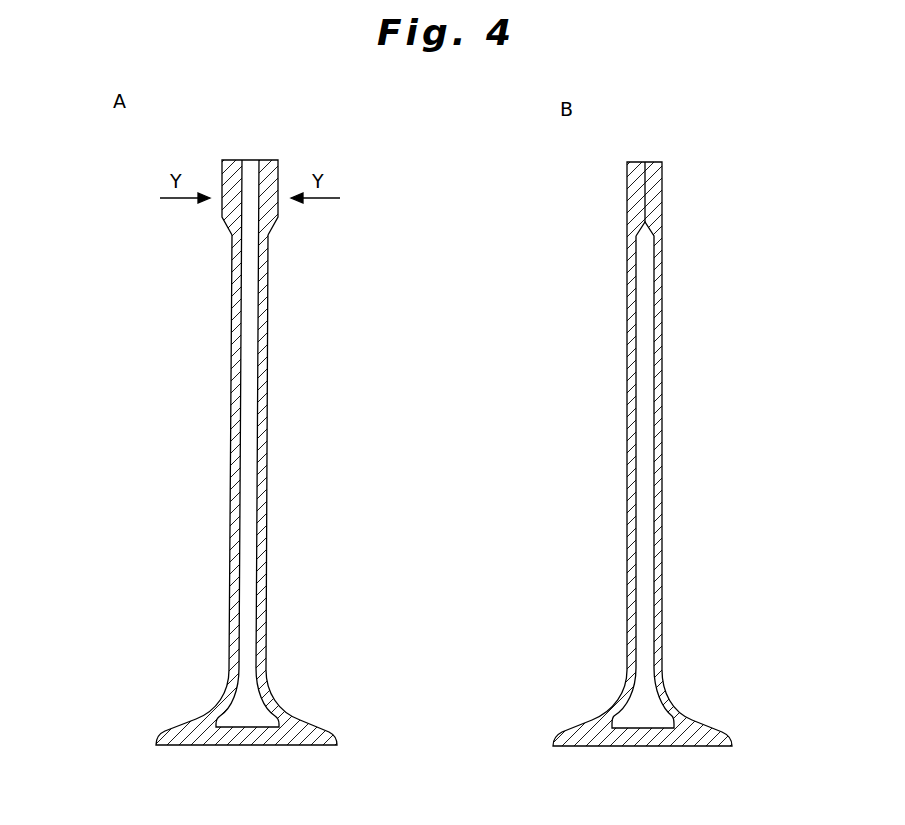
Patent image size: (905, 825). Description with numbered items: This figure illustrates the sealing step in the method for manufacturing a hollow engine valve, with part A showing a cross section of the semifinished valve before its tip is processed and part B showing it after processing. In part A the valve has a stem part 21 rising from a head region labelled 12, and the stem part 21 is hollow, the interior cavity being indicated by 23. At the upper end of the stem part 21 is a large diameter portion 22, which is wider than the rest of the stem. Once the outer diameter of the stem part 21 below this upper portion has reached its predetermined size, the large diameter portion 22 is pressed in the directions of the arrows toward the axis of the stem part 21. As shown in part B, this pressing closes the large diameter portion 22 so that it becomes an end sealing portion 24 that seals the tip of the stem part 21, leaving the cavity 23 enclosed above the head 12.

The valve head 12 is at (176, 731).
The stem part 21 is at (229, 401).
The large diameter portion 22 is at (222, 208).
The hollow bore 23 is at (240, 486).
The end sealing portion 24 is at (653, 199).